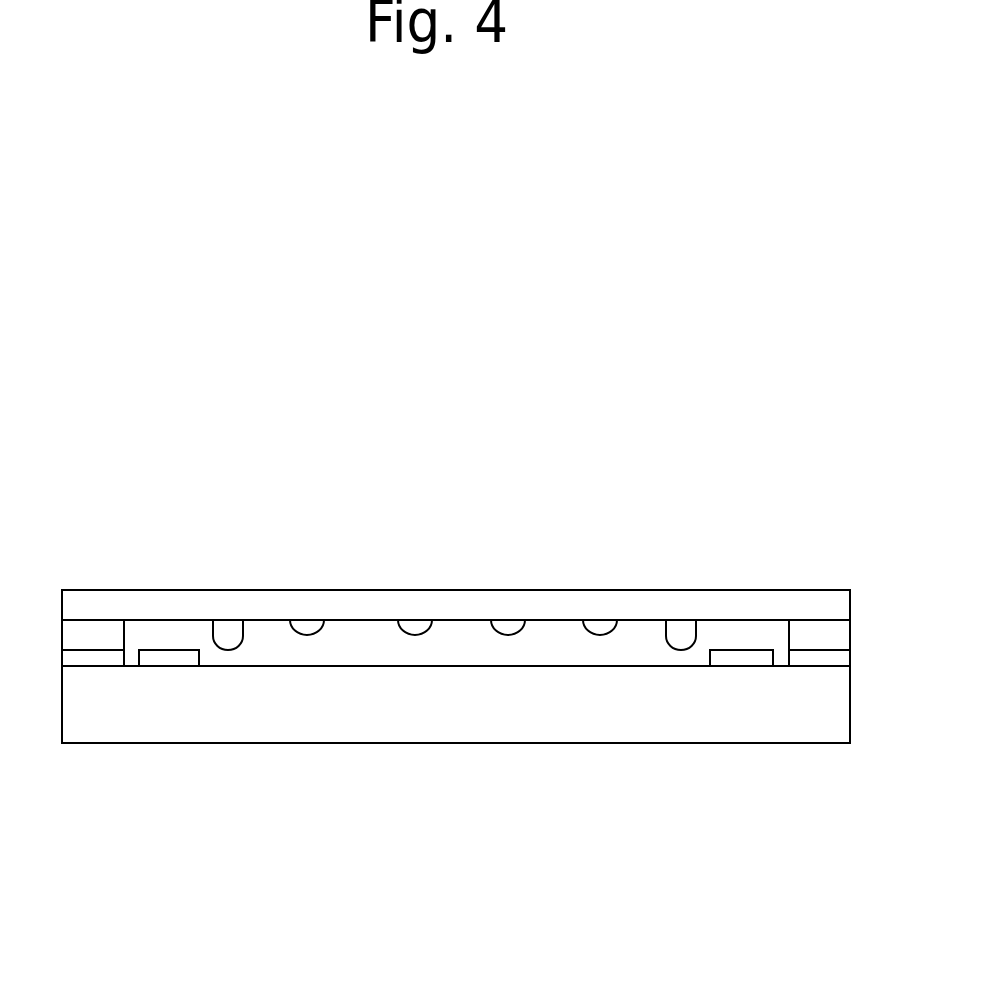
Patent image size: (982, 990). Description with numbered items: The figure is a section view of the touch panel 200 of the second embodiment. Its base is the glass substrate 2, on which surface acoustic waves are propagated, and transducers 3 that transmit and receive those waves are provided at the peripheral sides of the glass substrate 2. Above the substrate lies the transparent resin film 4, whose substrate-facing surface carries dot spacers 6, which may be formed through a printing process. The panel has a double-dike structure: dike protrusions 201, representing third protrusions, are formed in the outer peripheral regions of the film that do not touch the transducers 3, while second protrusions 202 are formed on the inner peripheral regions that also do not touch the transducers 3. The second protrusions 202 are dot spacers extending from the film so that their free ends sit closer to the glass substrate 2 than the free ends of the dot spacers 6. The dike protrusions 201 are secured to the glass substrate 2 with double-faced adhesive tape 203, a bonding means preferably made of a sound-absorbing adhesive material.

The touch panel 200 is at (450, 386).
The transparent resin film 4 is at (525, 590).
The glass substrate 2 is at (822, 727).
The dike protrusions 201 is at (93, 635).
The second protrusions 202 is at (229, 633).
The double-faced adhesive tape 203 is at (93, 658).
The transducers 3 is at (199, 650).
The dot spacers 6 is at (600, 635).